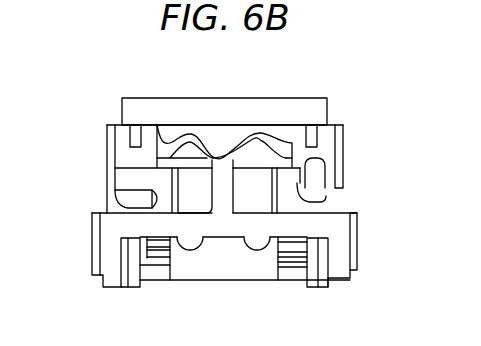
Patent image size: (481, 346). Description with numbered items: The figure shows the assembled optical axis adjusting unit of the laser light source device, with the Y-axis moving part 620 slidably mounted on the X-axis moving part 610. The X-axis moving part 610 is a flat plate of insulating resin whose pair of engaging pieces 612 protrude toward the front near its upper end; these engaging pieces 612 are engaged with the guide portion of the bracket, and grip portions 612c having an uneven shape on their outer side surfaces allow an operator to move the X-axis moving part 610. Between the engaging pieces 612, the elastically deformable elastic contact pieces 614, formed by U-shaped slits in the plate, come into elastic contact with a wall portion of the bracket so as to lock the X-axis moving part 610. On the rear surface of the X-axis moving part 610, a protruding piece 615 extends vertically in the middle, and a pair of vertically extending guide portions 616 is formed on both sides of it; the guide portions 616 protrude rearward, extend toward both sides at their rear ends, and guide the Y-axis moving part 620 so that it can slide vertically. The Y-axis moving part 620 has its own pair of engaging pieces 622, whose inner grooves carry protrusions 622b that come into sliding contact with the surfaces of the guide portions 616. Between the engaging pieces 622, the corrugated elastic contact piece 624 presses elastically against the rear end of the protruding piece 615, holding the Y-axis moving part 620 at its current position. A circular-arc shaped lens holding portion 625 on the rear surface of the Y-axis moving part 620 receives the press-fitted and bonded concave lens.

The X-axis moving part 610 is at (91, 239).
The engaging pieces 612 is at (342, 267).
The grip portions 612c is at (357, 248).
The elastic contact pieces 614 is at (254, 246).
The protruding piece 615 is at (230, 184).
The guide portions 616 is at (115, 195).
The Y-axis moving part 620 is at (107, 142).
The engaging pieces 622 is at (324, 203).
The protrusions 622b is at (322, 160).
The elastic contact piece 624 is at (248, 145).
The lens holding portion 625 is at (320, 108).